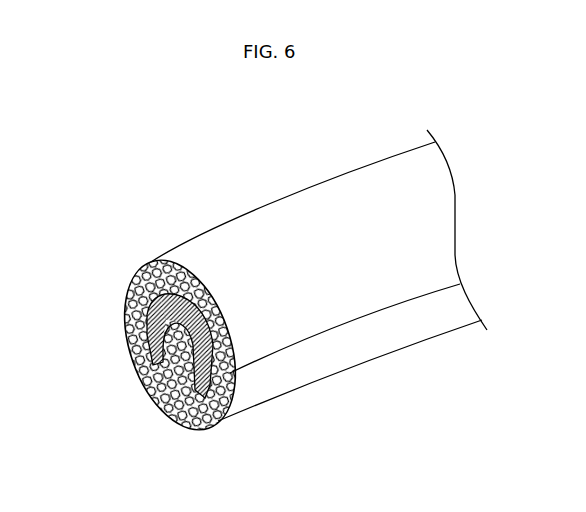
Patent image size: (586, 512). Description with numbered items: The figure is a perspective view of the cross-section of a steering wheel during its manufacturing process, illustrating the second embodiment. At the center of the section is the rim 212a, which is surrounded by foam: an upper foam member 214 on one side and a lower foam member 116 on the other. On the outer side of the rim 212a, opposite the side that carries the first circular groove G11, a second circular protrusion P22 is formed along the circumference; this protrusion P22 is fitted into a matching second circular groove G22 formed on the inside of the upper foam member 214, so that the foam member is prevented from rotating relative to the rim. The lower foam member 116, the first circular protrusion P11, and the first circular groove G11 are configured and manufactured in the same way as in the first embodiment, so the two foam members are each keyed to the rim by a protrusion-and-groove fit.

The upper foam member 214 is at (156, 252).
The rim 212a is at (233, 393).
The lower foam member 116 is at (220, 421).
The second circular protrusion P22 is at (132, 284).
The first circular protrusion P11 is at (148, 355).
The second circular groove G22 is at (212, 302).
The first circular groove G11 is at (158, 385).